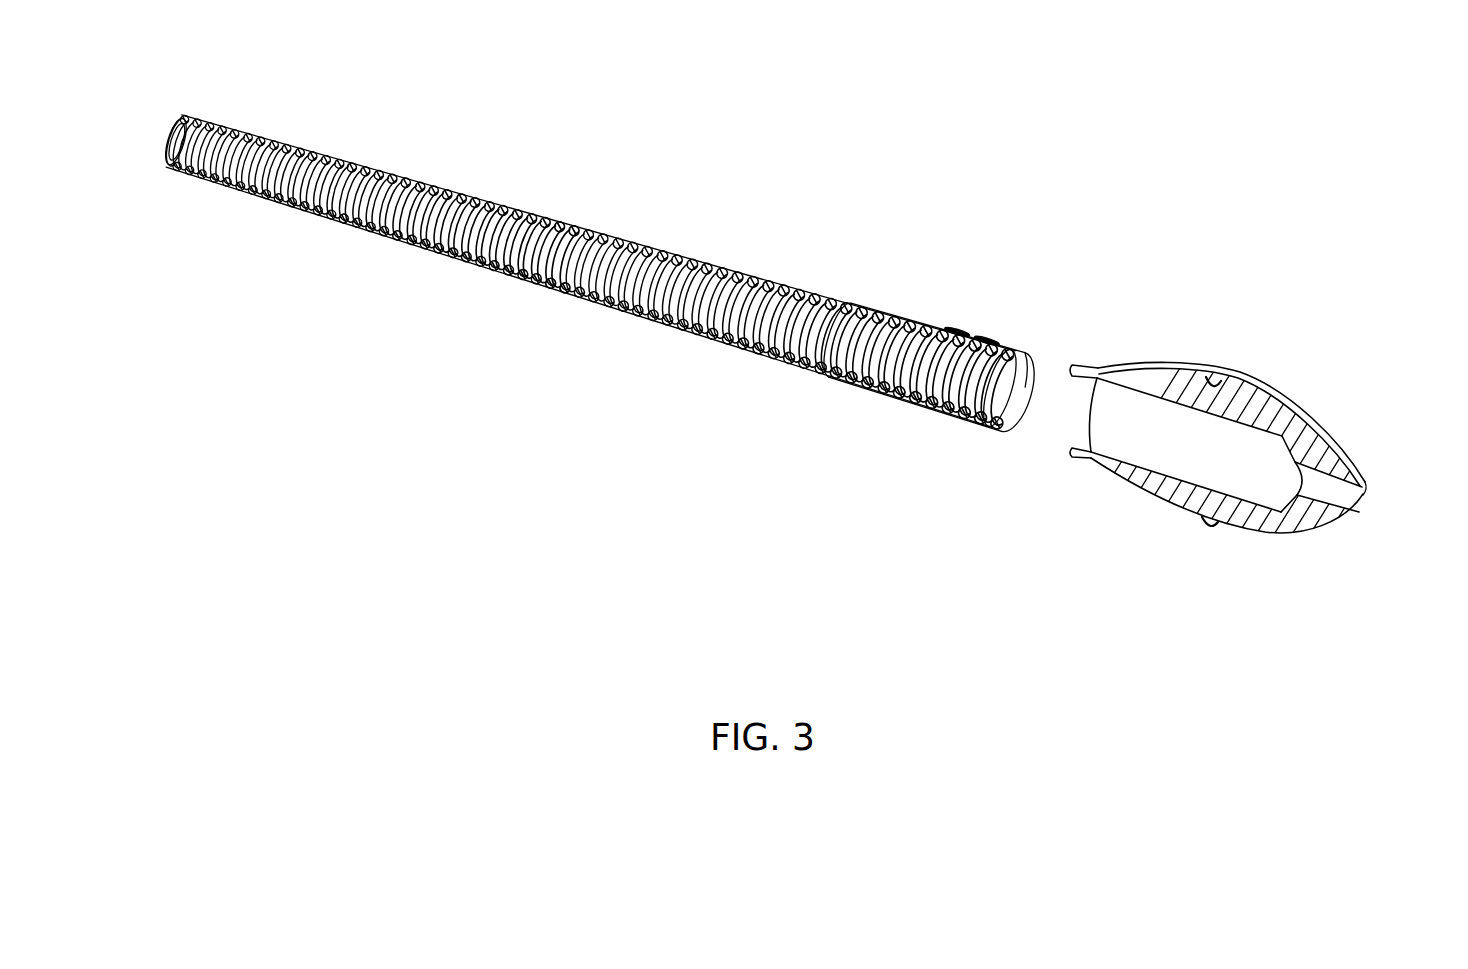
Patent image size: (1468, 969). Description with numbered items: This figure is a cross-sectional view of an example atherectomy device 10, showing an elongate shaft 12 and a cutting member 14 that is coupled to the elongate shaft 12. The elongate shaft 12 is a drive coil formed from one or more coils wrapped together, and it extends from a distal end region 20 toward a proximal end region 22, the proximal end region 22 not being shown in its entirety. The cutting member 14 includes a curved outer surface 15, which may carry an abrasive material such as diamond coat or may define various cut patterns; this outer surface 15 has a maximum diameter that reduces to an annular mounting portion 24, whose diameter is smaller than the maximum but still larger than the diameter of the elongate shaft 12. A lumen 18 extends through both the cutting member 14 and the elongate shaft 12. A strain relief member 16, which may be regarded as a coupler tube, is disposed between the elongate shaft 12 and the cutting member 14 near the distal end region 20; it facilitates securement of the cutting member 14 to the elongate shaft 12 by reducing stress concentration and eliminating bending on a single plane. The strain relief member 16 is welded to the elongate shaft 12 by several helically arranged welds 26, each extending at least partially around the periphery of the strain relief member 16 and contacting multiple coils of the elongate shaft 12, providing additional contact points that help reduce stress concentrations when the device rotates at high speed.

The atherectomy device 10 is at (724, 93).
The elongate shaft 12 is at (574, 211).
The cutting member 14 is at (1249, 360).
The outer surface 15 is at (1300, 418).
The strain relief member 16 is at (871, 312).
The lumen 18 is at (166, 140).
The distal end region 20 is at (856, 413).
The proximal end region 22 is at (205, 199).
The annular mounting portion 24 is at (1091, 364).
The helically arranged welds 26 is at (936, 327).